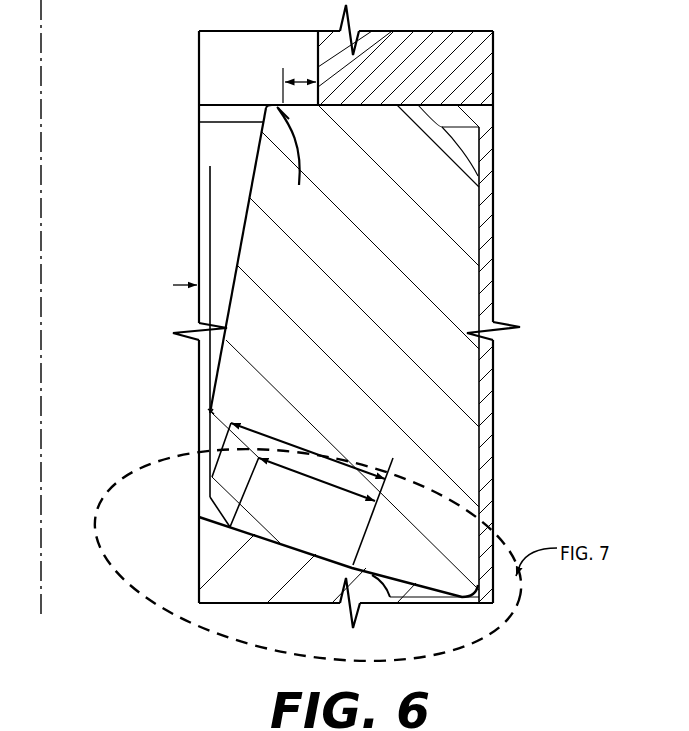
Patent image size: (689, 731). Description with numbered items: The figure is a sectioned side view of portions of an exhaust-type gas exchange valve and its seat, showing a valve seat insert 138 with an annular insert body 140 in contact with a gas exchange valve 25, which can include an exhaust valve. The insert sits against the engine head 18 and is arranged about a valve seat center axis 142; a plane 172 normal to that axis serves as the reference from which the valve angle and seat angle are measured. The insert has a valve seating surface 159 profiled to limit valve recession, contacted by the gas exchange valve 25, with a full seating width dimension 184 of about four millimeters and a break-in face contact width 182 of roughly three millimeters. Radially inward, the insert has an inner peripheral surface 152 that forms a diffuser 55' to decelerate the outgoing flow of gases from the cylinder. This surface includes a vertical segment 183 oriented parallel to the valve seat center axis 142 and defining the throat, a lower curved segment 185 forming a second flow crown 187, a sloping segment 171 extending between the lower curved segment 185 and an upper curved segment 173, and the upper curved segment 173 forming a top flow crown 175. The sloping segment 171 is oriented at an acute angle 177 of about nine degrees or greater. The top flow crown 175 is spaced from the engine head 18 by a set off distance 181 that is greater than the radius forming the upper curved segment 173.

The valve seat center axis 142 is at (43, 132).
The engine head 18 is at (484, 73).
The set off distance 181 is at (301, 76).
The diffuser 55' is at (247, 99).
The top flow crown 175 is at (277, 107).
The upper curved segment 173 is at (296, 161).
The sloping segment 171 is at (248, 215).
The acute angle 177 is at (240, 290).
The valve seat insert 138 is at (380, 286).
The annular insert body 140 is at (373, 354).
The inner peripheral surface 152 is at (182, 308).
The second flow crown 187 is at (211, 411).
The lower curved segment 185 is at (212, 410).
The vertical segment 183 is at (209, 451).
The full seating width dimension 184 is at (328, 454).
The break-in face contact width 182 is at (346, 492).
The valve seating surface 159 is at (288, 544).
The gas exchange valve 25 is at (213, 566).
The plane 172 is at (413, 594).